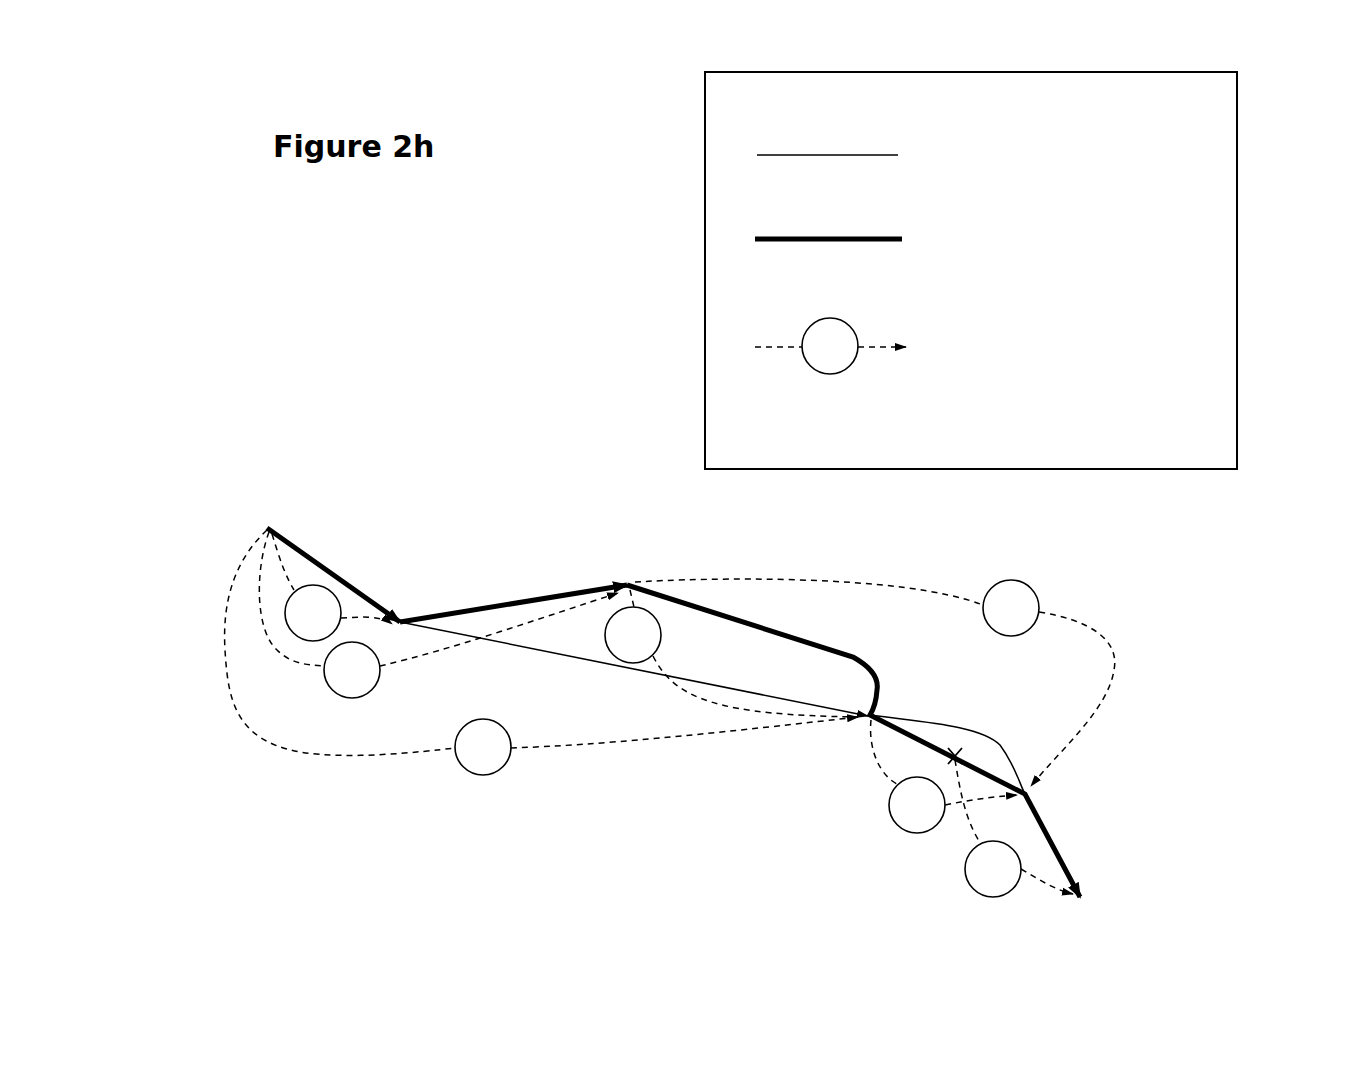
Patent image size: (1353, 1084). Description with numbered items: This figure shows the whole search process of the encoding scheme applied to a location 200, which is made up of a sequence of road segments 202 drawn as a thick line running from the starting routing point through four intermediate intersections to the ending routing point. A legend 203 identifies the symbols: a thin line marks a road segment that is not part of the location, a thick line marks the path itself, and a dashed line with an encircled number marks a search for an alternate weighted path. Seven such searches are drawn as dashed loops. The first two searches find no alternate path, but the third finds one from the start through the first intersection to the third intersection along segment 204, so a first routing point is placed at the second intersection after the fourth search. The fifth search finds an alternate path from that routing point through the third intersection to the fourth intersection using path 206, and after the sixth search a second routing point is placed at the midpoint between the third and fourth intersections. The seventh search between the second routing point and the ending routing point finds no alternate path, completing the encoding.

The location 200 is at (243, 365).
The sequence of road segments 202 is at (542, 598).
The legend 203 is at (702, 300).
The segment 204 is at (595, 663).
The path 206 is at (996, 731).